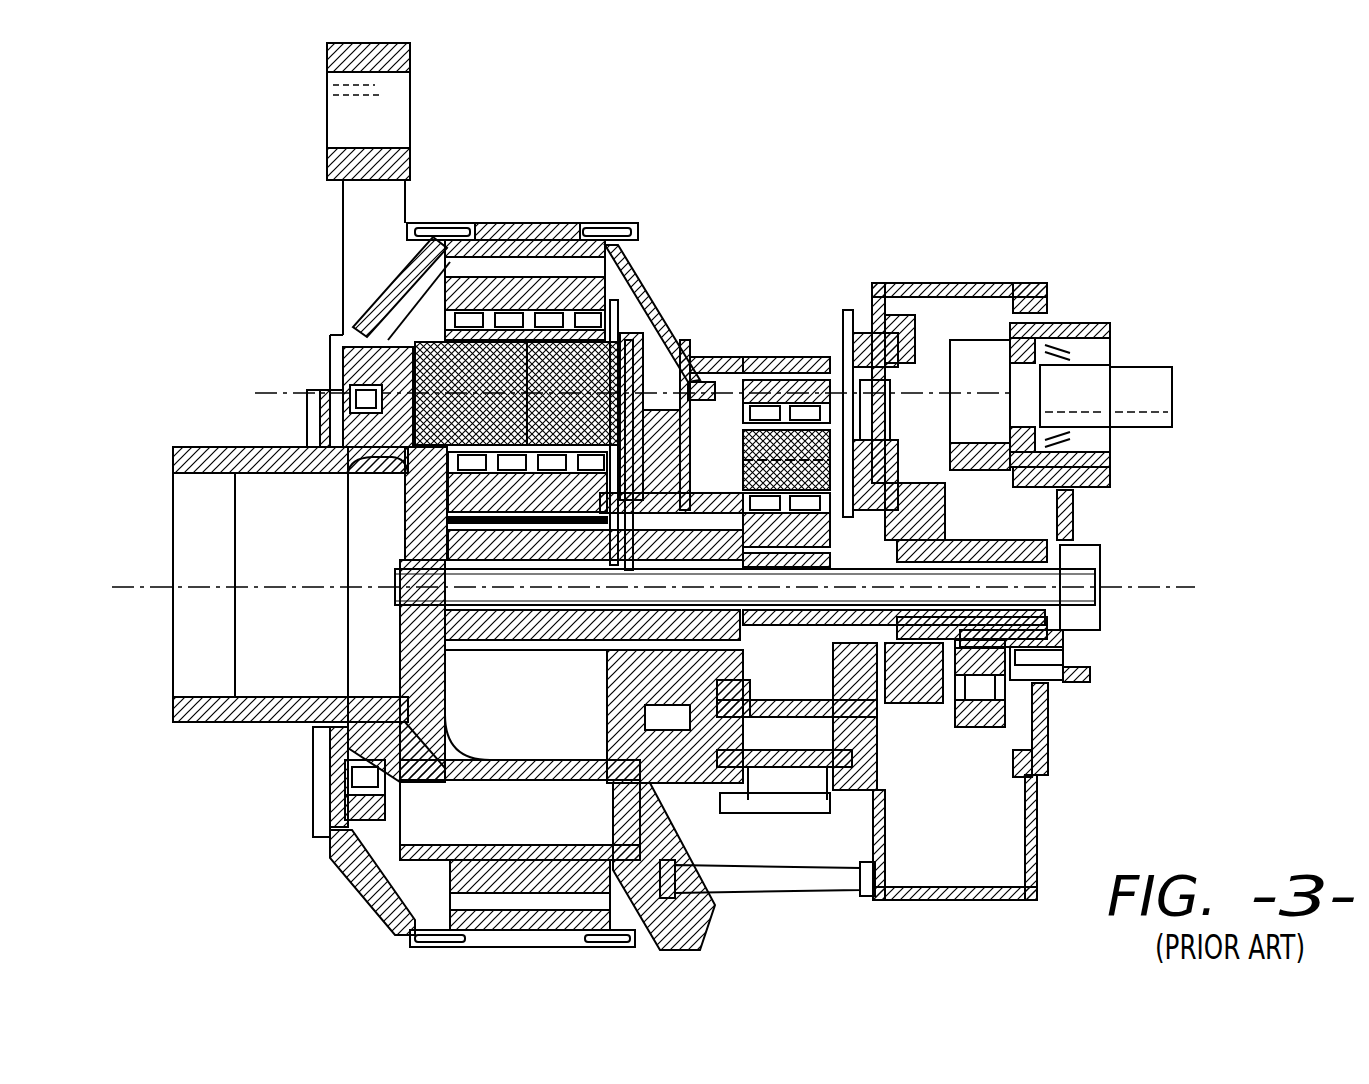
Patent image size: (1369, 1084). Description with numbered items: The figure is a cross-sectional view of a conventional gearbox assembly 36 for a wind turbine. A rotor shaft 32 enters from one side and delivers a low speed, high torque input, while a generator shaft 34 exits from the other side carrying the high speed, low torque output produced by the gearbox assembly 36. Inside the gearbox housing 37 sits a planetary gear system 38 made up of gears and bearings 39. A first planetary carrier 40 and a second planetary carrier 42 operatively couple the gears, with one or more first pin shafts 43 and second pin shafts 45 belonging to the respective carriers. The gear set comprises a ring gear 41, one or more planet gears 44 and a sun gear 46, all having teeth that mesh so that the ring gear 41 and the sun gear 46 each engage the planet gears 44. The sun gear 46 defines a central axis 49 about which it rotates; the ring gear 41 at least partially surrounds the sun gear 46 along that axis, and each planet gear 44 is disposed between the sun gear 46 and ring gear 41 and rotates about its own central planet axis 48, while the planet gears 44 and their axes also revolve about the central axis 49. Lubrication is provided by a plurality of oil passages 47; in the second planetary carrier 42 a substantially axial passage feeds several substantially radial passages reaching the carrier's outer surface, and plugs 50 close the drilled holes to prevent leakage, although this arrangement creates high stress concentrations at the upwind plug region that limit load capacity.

The rotor shaft 32 is at (172, 530).
The generator shaft 34 is at (1145, 378).
The gearbox assembly 36 is at (1128, 248).
The gearbox housing 37 is at (988, 284).
The planetary gear system 38 is at (432, 282).
The bearings 39 is at (655, 400).
The first planetary carrier 40 is at (225, 445).
The ring gear 41 is at (550, 272).
The second planetary carrier 42 is at (730, 415).
The first pin shafts 43 is at (375, 305).
The planet gears 44 is at (515, 295).
The second pin shafts 45 is at (802, 440).
The sun gear 46 is at (520, 615).
The oil passages 47 is at (613, 240).
The central planet axis 48 is at (272, 385).
The central axis 49 is at (128, 592).
The plugs 50 is at (782, 440).